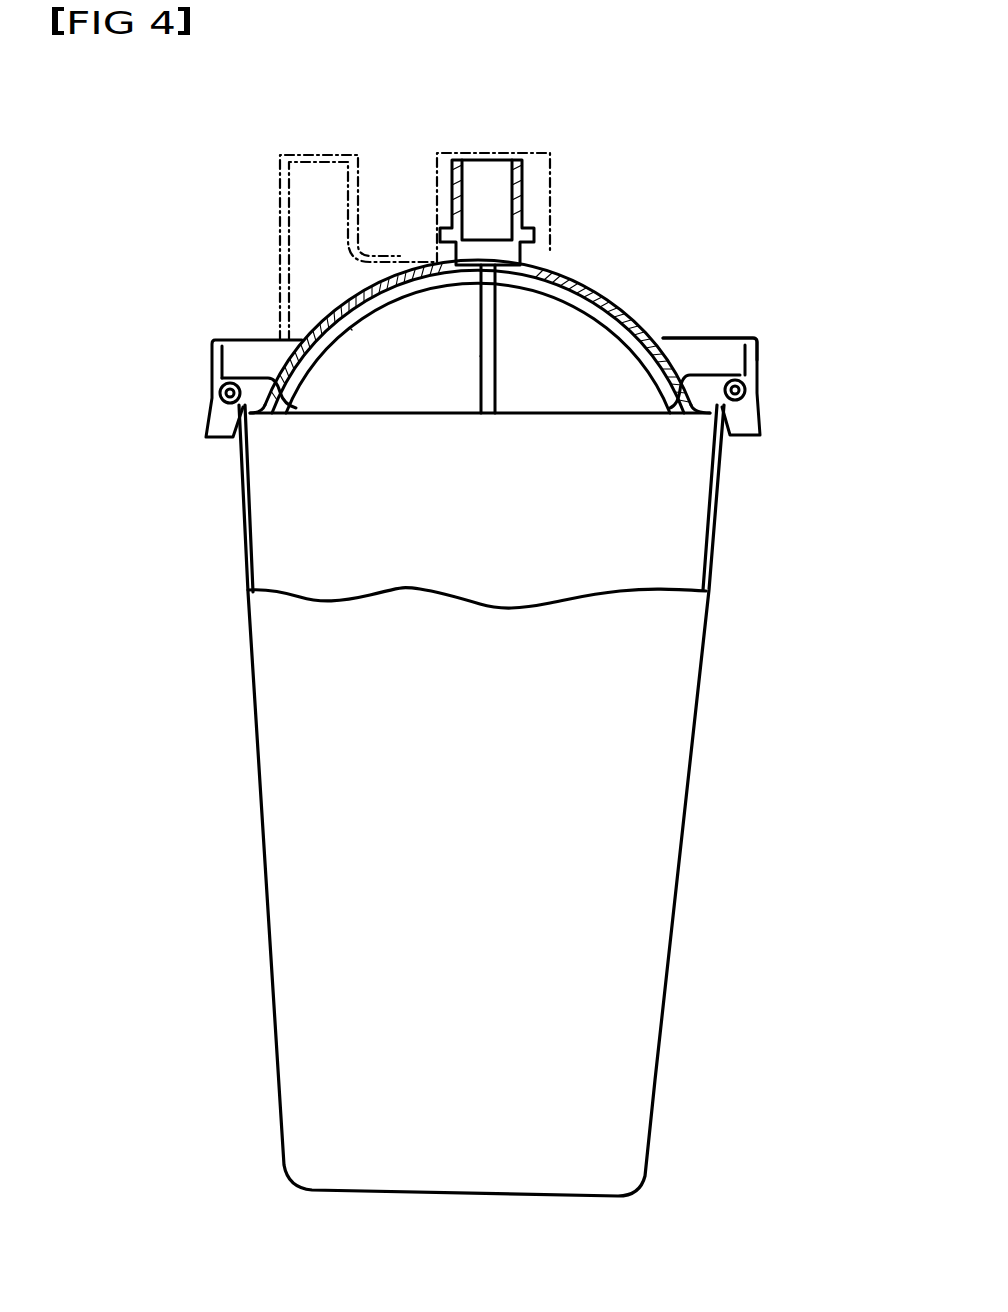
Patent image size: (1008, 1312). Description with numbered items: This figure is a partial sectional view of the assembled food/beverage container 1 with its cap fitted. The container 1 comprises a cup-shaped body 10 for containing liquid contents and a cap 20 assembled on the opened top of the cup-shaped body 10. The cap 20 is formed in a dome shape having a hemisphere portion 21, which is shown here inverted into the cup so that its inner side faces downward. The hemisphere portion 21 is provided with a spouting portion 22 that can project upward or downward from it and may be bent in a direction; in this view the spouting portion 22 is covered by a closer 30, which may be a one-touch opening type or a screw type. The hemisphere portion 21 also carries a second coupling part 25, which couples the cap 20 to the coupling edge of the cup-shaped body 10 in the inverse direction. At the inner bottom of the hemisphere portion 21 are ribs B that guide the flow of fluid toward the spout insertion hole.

The food/beverage container 1 is at (718, 648).
The cup-shaped body 10 is at (258, 768).
The cap 20 is at (281, 335).
The hemisphere portion 21 is at (620, 295).
The spouting portion 22 is at (280, 195).
The second coupling part 25 is at (718, 340).
The closer 30 is at (548, 222).
The ribs B is at (350, 328).